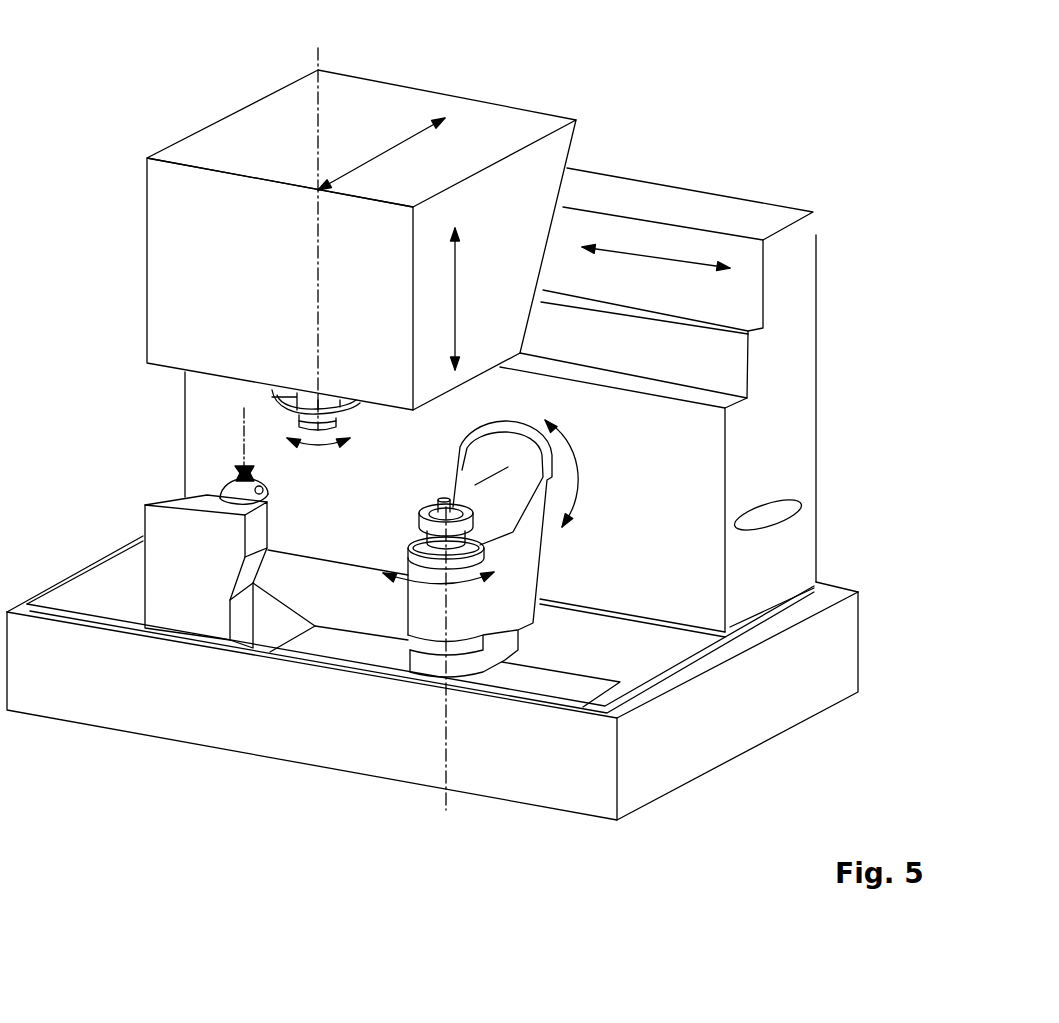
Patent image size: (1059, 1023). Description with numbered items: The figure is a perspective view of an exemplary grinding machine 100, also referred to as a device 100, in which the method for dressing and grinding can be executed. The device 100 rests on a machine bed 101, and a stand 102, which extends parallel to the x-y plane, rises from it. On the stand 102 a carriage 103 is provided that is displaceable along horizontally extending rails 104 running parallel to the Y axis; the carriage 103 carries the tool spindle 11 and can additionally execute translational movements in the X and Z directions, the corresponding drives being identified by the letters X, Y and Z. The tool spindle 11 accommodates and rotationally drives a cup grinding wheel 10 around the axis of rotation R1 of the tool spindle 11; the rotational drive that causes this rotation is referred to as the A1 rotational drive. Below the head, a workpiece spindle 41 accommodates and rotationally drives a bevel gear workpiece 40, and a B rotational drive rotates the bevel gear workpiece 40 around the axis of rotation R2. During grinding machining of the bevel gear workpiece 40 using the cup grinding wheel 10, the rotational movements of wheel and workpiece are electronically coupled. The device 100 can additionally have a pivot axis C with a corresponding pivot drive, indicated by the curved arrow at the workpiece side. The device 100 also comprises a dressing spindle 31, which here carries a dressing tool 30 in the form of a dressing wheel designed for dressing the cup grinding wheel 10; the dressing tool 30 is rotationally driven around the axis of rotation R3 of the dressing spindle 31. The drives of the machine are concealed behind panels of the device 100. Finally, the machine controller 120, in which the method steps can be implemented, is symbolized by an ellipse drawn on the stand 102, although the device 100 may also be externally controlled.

The grinding machine 100 is at (833, 49).
The machine bed 101 is at (795, 716).
The stand 102 is at (805, 438).
The carriage 103 is at (147, 235).
The rails 104 is at (748, 331).
The machine controller 120 is at (797, 510).
The cup grinding wheel 10 is at (338, 425).
The tool spindle 11 is at (283, 394).
The dressing tool 30 is at (254, 470).
The dressing spindle 31 is at (221, 477).
The bevel gear workpiece 40 is at (473, 518).
The workpiece spindle 41 is at (467, 532).
The axis of rotation of the tool spindle R1 is at (323, 224).
The axis of rotation of the workpiece R2 is at (448, 676).
The axis of rotation of the dressing spindle R3 is at (243, 442).
The A1 rotational drive A1 is at (318, 460).
The B rotational drive B is at (438, 597).
The pivot axis C is at (575, 473).
The X drive X is at (466, 299).
The Y drive Y is at (656, 271).
The Z drive Z is at (381, 154).